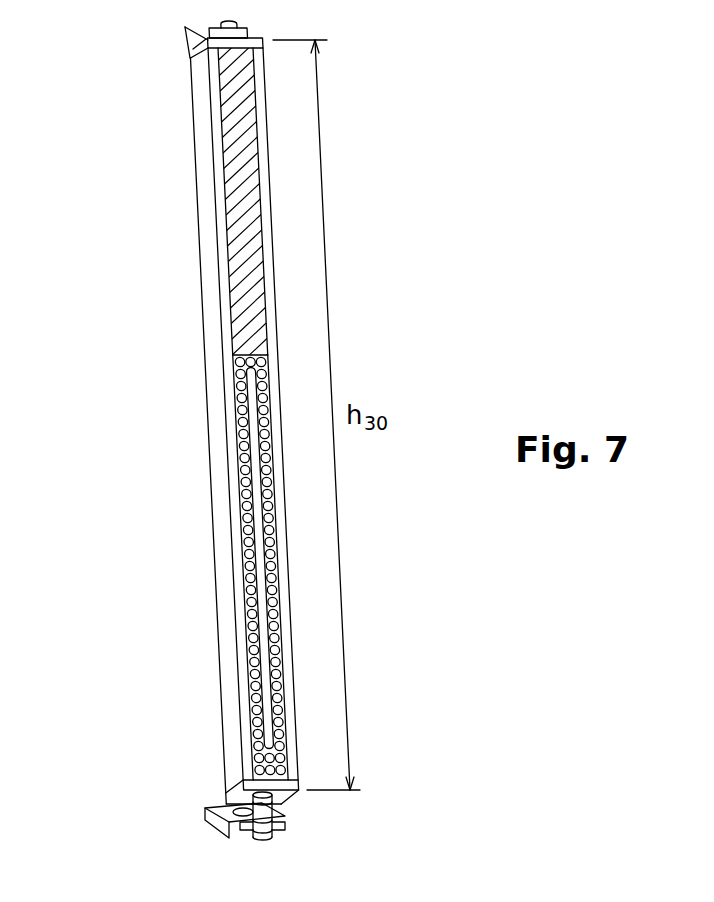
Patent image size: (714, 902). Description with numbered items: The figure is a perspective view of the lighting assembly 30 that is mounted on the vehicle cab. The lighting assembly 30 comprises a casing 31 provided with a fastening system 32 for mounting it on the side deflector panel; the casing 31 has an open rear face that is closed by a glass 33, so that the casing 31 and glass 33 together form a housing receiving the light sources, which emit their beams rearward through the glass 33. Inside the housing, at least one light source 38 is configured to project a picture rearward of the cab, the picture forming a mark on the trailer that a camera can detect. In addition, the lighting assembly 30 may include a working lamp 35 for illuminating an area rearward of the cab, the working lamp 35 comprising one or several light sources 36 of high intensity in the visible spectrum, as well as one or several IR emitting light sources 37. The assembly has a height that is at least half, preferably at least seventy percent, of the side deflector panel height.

The lighting assembly 30 is at (88, 246).
The casing 31 is at (227, 722).
The fastening system 32 is at (155, 35).
The glass 33 is at (247, 682).
The working lamp 35 is at (123, 408).
The light sources 36 is at (233, 398).
The IR emitting light source 37 is at (252, 383).
The light source 38 is at (240, 135).